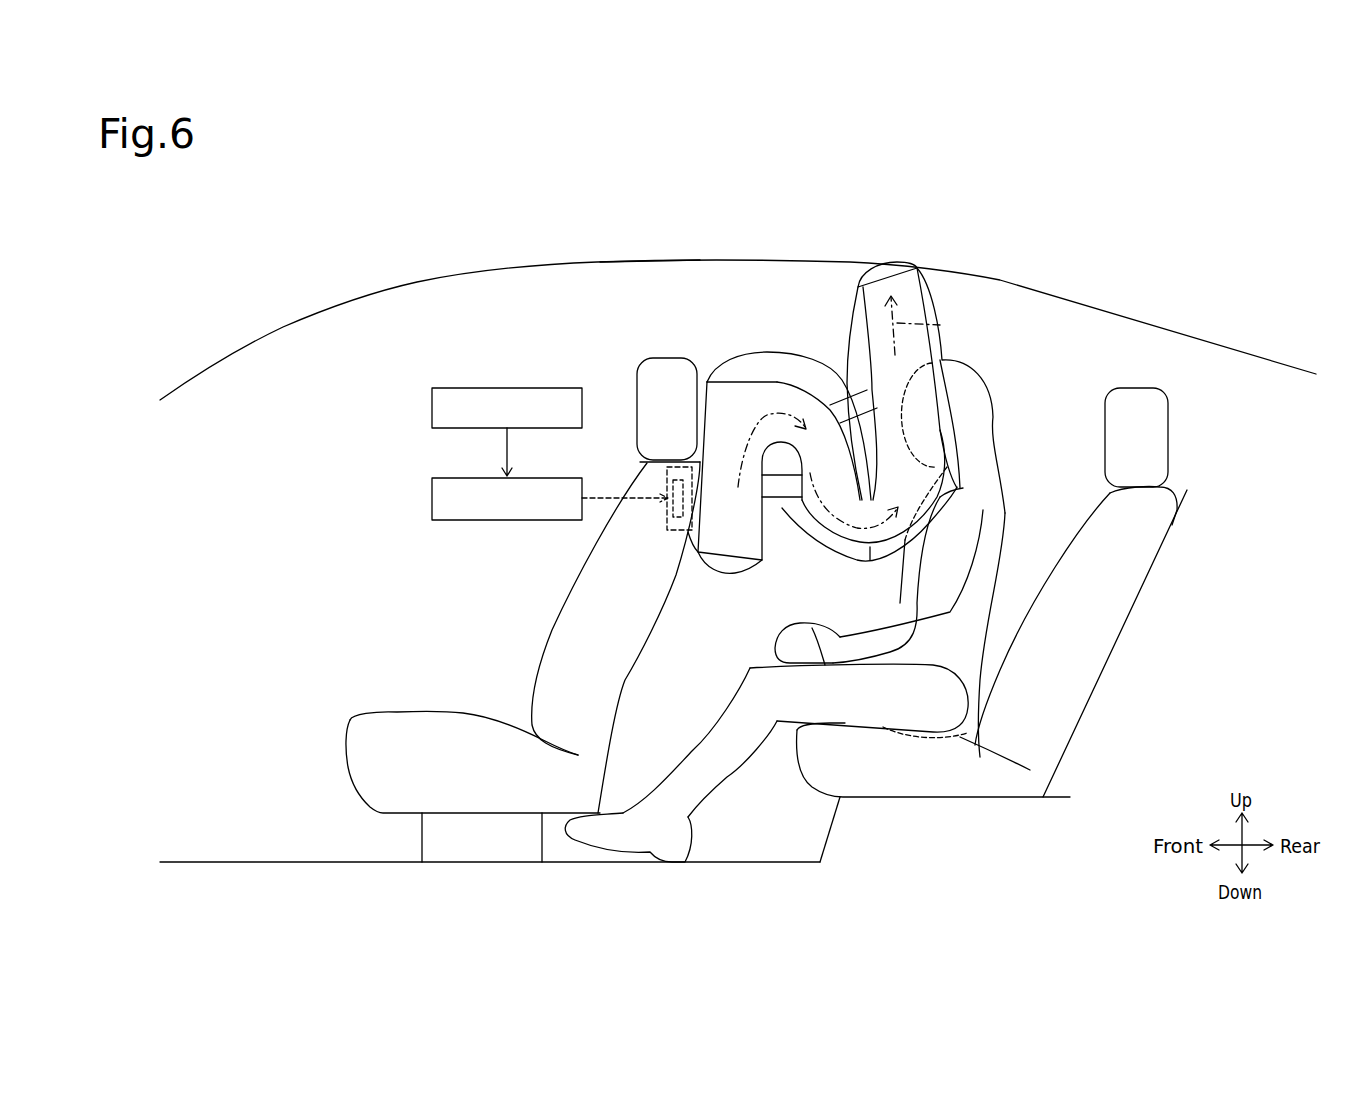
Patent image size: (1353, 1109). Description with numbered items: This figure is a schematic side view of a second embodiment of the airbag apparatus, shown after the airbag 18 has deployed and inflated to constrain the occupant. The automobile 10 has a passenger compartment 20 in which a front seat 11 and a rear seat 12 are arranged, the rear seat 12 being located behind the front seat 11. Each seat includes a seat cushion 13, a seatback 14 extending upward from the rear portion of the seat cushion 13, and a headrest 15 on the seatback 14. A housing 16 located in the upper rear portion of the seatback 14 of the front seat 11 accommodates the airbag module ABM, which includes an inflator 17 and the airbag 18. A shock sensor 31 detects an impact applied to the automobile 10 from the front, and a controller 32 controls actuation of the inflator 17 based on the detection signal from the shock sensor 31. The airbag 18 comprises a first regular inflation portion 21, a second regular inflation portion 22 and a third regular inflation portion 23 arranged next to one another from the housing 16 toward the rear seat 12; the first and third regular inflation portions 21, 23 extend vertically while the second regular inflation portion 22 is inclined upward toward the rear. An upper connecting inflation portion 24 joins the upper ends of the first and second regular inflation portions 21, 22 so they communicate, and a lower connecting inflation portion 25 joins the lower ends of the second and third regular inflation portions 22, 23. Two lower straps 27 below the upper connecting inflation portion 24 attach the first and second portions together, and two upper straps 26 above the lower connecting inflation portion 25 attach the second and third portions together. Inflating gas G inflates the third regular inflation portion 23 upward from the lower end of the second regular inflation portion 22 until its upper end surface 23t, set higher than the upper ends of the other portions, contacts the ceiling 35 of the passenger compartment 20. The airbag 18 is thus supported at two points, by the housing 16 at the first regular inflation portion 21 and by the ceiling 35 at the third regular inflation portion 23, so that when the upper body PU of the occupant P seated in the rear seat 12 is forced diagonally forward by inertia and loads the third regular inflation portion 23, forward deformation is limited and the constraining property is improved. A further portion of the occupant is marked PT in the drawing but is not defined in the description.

The automobile 10 is at (295, 297).
The front seat 11 is at (482, 837).
The rear seat 12 is at (830, 829).
The seat cushion 13 is at (350, 781).
The seatback 14 is at (655, 630).
The headrest 15 is at (665, 358).
The housing 16 is at (682, 532).
The inflator 17 is at (668, 508).
The airbag 18 is at (846, 399).
The passenger compartment 20 is at (367, 384).
The first regular inflation portion 21 is at (723, 456).
The second regular inflation portion 22 is at (821, 523).
The third regular inflation portion 23 is at (988, 418).
The upper end surface 23t is at (870, 262).
The upper connecting inflation portion 24 is at (772, 397).
The lower connecting inflation portion 25 is at (870, 563).
The upper straps 26 is at (860, 384).
The lower straps 27 is at (778, 492).
The shock sensor 31 is at (430, 408).
The controller 32 is at (430, 501).
The ceiling 35 is at (617, 265).
The airbag module ABM is at (658, 477).
The occupant P is at (808, 612).
The passenger hand PT is at (812, 627).
The upper body PU is at (900, 580).
The inflating gas G is at (962, 318).